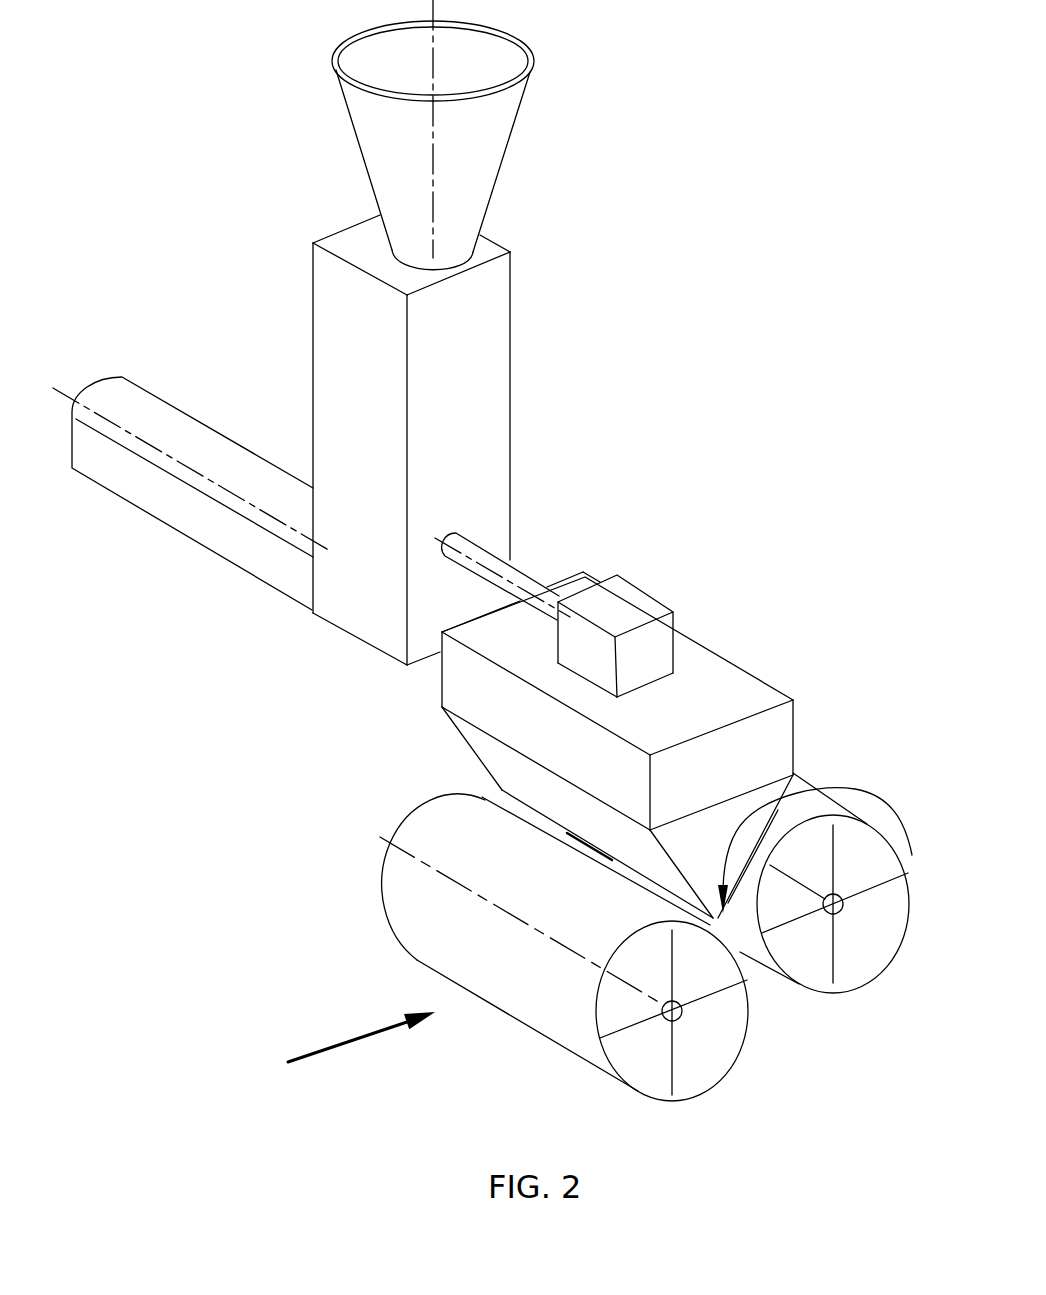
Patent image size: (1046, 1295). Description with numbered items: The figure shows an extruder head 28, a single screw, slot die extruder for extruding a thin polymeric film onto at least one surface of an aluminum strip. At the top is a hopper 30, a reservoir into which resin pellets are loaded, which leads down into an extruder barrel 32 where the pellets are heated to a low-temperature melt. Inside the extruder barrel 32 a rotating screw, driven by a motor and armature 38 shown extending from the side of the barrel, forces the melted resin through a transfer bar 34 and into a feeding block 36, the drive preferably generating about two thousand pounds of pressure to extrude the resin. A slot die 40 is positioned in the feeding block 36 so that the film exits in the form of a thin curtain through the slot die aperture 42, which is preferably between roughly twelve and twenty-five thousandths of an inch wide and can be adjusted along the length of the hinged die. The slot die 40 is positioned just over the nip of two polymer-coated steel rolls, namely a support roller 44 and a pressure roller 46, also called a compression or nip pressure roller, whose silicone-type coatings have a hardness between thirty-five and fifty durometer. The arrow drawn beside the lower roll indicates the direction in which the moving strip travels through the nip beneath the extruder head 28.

The extruder head 28 is at (660, 115).
The hopper 30 is at (477, 173).
The extruder barrel 32 is at (492, 375).
The transfer bar 34 is at (519, 571).
The feeding block 36 is at (643, 590).
The motor and armature 38 is at (218, 430).
The slot die 40 is at (794, 733).
The slot die aperture 42 is at (827, 792).
The support roller 44 is at (577, 1017).
The pressure roller 46 is at (842, 917).